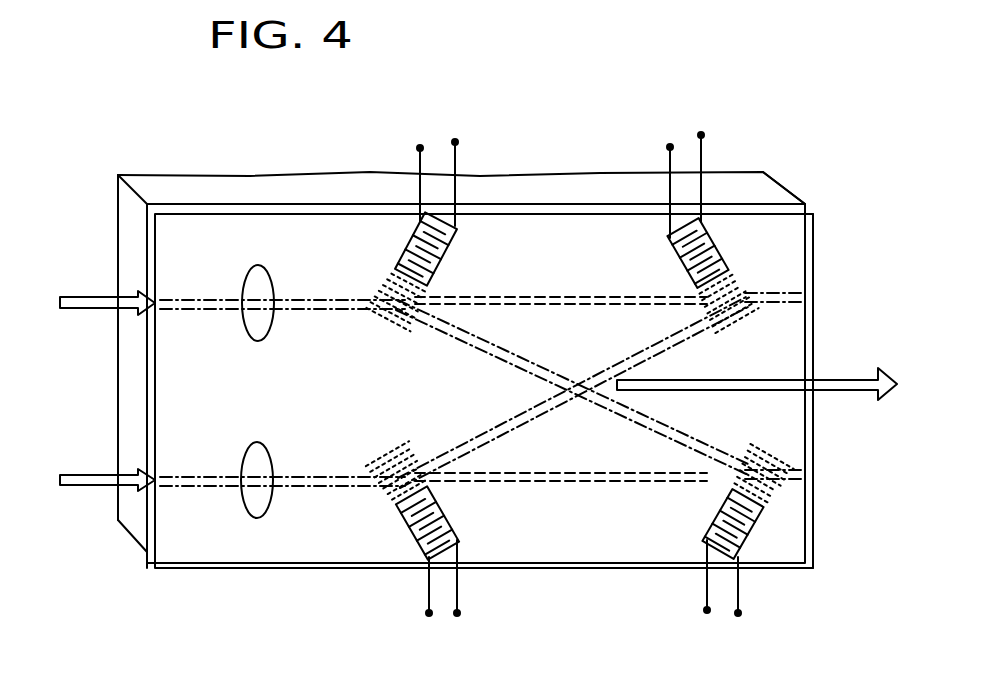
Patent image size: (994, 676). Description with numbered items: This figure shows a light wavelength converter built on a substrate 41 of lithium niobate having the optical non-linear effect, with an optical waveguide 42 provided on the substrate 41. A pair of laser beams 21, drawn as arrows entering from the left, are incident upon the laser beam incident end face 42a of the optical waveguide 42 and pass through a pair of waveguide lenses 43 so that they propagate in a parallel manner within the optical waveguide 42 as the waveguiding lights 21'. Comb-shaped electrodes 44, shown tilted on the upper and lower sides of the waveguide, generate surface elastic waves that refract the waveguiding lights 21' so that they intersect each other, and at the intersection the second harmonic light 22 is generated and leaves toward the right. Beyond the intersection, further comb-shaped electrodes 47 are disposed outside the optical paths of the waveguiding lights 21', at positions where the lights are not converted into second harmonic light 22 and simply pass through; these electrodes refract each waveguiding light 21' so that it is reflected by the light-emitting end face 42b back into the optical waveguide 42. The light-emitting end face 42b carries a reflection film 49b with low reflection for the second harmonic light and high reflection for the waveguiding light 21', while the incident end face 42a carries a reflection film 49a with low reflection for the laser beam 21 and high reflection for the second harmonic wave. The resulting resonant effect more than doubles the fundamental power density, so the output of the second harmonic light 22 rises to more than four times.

The laser beams 21 is at (107, 401).
The waveguiding lights 21' is at (482, 419).
The second harmonic light 22 is at (847, 392).
The substrate 41 is at (573, 183).
The optical waveguide 42 is at (742, 200).
The laser beam incident end face 42a is at (150, 203).
The light-emitting end face 42b is at (803, 202).
The waveguide lenses 43 is at (268, 290).
The comb-shaped electrodes 44 is at (443, 252).
The comb-shaped electrodes 47 is at (717, 247).
The reflection film 49a is at (149, 553).
The reflection film 49b is at (813, 227).